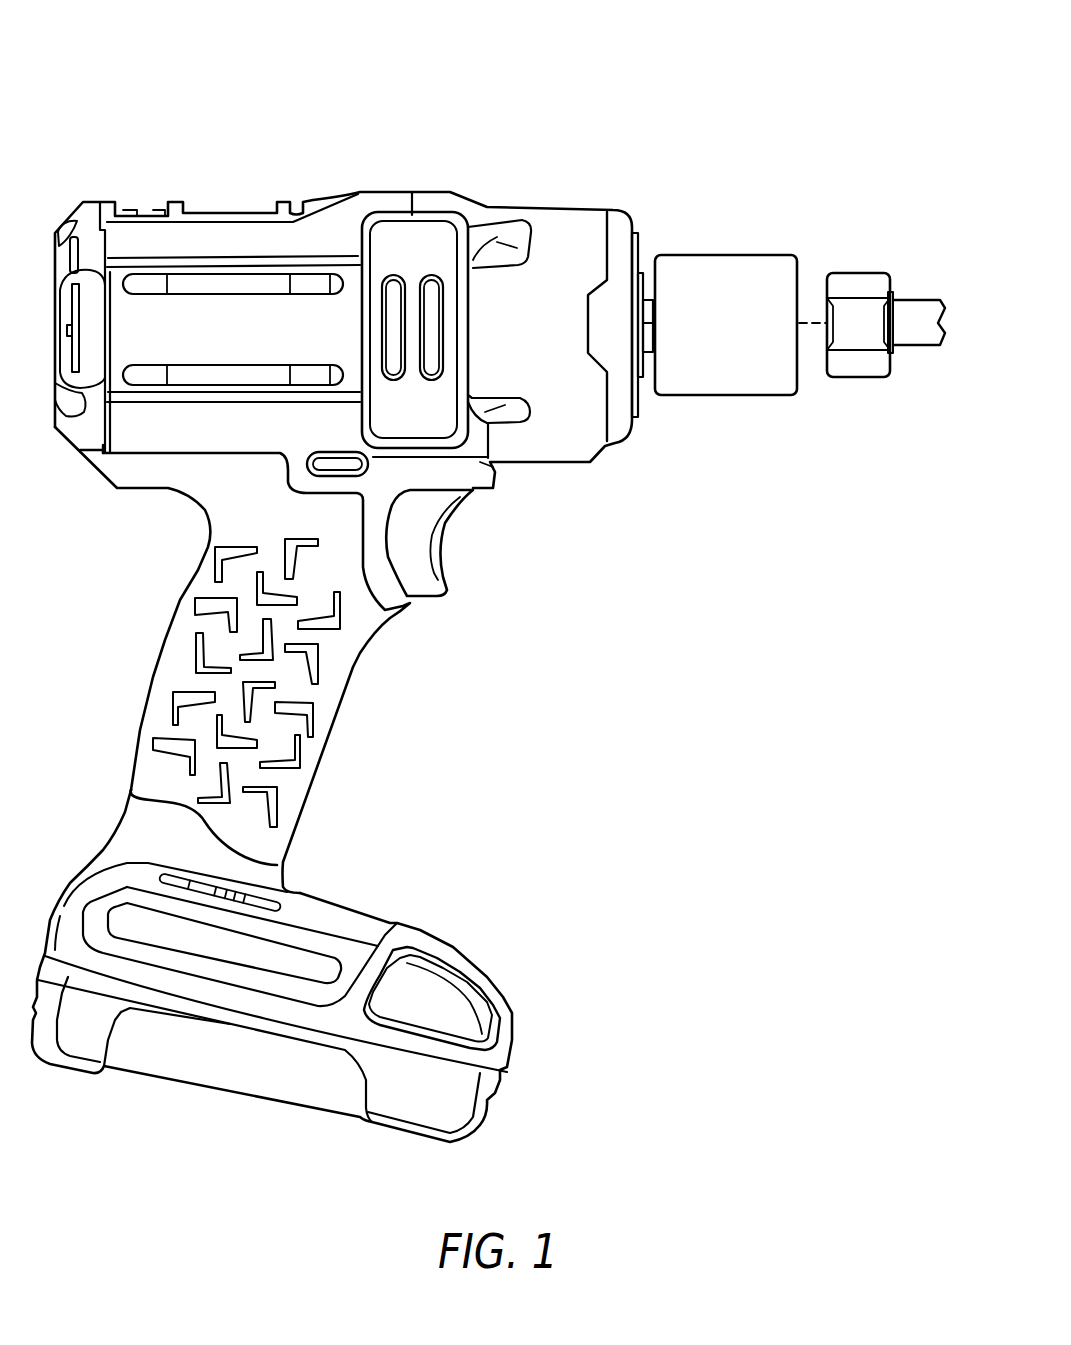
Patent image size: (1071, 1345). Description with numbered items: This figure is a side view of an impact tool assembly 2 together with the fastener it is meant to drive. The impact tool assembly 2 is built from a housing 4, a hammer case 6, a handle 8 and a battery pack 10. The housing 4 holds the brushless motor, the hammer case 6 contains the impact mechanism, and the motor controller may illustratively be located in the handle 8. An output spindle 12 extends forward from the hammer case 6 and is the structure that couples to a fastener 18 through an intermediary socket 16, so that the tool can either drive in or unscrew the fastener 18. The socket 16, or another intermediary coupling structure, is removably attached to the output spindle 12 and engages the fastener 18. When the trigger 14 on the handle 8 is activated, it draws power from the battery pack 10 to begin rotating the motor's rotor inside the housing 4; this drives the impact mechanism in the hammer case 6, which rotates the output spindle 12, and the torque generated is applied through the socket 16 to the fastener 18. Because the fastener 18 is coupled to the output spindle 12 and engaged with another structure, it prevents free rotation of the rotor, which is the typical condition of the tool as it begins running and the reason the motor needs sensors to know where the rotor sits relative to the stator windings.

The impact tool assembly 2 is at (178, 112).
The housing 4 is at (122, 190).
The hammer case 6 is at (548, 204).
The handle 8 is at (232, 633).
The battery pack 10 is at (488, 1140).
The output spindle 12 is at (653, 356).
The trigger 14 is at (452, 583).
The socket 16 is at (728, 254).
The fastener 18 is at (860, 378).